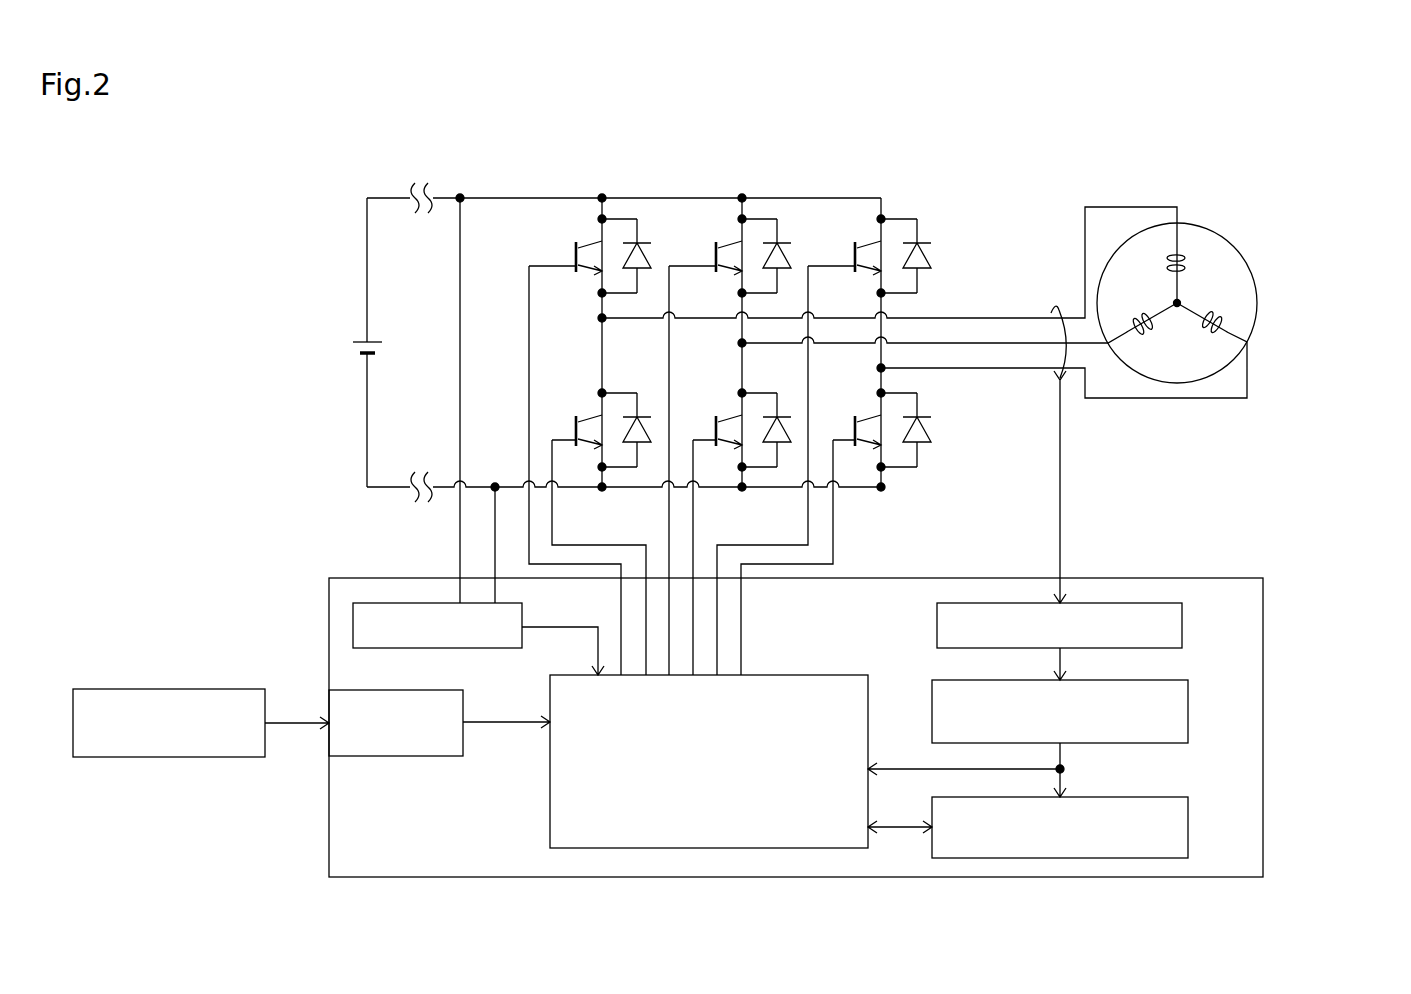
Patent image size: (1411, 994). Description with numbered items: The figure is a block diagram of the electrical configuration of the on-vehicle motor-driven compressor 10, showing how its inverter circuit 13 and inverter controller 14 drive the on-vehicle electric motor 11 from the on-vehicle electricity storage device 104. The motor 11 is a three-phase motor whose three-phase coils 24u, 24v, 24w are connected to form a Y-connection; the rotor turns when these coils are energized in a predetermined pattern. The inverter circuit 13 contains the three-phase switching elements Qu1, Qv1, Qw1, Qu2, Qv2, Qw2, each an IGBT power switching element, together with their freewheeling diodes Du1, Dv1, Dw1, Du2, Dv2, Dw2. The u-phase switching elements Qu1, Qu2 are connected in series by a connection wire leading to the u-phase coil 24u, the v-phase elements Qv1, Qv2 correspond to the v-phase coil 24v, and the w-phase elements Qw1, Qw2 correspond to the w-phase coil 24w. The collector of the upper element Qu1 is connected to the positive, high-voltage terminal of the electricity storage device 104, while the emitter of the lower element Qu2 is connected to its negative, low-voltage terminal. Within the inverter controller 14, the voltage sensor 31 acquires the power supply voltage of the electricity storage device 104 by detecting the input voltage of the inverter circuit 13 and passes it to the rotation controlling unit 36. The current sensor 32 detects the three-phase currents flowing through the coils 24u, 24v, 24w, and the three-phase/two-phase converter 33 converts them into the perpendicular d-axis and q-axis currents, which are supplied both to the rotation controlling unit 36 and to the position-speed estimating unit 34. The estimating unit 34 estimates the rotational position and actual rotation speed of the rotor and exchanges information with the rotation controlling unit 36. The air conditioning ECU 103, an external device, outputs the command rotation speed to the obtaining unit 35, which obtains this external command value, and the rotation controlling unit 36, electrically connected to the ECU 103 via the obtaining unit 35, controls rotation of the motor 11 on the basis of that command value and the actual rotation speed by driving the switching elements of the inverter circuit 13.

The on-vehicle motor-driven compressor 10 is at (1373, 181).
The on-vehicle electric motor 11 is at (1181, 276).
The inverter circuit 13 is at (901, 184).
The inverter controller 14 is at (1189, 578).
The u-phase coil 24u is at (1190, 262).
The v-phase coil 24v is at (1141, 328).
The w-phase coil 24w is at (1212, 324).
The voltage sensor 31 is at (382, 602).
The current sensor 32 is at (1183, 624).
The three-phase/two-phase converter 33 is at (1189, 710).
The position-speed estimating unit 34 is at (1189, 824).
The obtaining unit 35 is at (380, 690).
The rotation controlling unit 36 is at (809, 675).
The air conditioning ECU 103 is at (172, 689).
The on-vehicle electricity storage device 104 is at (356, 341).
The u-phase switching element Qu1 is at (572, 262).
The v-phase switching element Qv1 is at (712, 262).
The w-phase switching element Qw1 is at (852, 262).
The u-phase switching element Qu2 is at (572, 436).
The v-phase switching element Qv2 is at (712, 436).
The w-phase switching element Qw2 is at (852, 436).
The freewheeling diode Du1 is at (641, 243).
The freewheeling diode Dv1 is at (781, 243).
The freewheeling diode Dw1 is at (926, 237).
The freewheeling diode Du2 is at (640, 418).
The freewheeling diode Dv2 is at (780, 418).
The freewheeling diode Dw2 is at (926, 424).